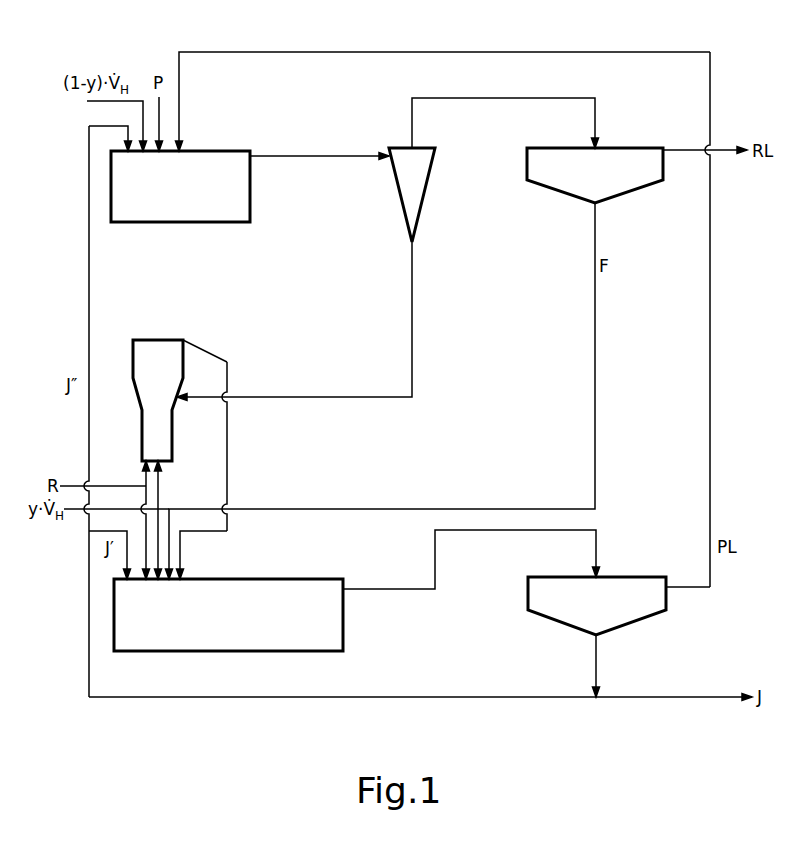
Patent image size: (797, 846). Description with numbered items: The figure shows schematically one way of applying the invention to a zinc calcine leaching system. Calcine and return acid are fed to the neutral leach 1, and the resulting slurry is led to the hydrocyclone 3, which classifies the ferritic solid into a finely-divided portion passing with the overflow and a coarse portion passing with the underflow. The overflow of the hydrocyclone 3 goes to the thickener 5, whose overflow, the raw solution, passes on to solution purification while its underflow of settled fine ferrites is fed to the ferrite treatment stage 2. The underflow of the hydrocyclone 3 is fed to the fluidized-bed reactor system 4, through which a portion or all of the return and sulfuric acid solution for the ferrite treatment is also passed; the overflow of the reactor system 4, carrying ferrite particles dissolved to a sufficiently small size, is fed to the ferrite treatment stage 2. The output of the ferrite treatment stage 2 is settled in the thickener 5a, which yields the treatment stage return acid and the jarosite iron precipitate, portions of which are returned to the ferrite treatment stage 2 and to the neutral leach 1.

The neutral leach 1 is at (180, 186).
The ferrite treatment stage 2 is at (228, 615).
The hydrocyclone 3 is at (412, 195).
The fluidized-bed reactor system 4 is at (158, 400).
The thickener 5 is at (595, 175).
The thickener 5a is at (597, 606).